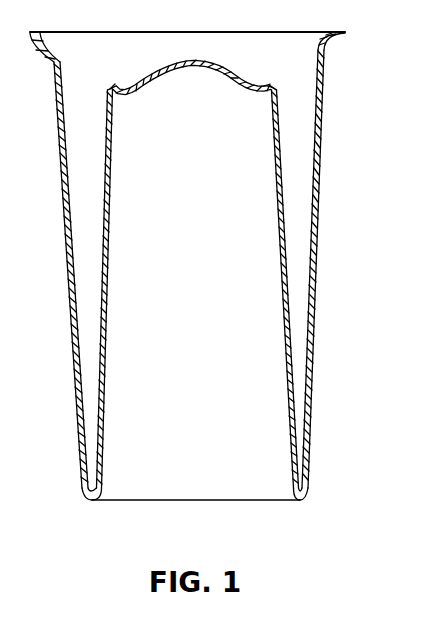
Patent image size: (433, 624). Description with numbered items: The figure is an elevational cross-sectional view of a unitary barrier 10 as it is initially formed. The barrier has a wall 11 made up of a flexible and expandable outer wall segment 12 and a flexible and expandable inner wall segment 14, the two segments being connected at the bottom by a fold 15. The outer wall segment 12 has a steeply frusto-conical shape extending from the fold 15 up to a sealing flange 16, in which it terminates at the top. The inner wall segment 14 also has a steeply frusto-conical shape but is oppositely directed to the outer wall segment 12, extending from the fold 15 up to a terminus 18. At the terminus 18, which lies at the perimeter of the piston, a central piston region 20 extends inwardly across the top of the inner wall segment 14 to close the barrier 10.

The unitary barrier 10 is at (213, 286).
The wall 11 is at (312, 123).
The outer wall segment 12 is at (319, 251).
The inner wall segment 14 is at (112, 251).
The fold 15 is at (277, 500).
The sealing flange 16 is at (339, 46).
The terminus 18 is at (268, 83).
The central piston region 20 is at (155, 84).